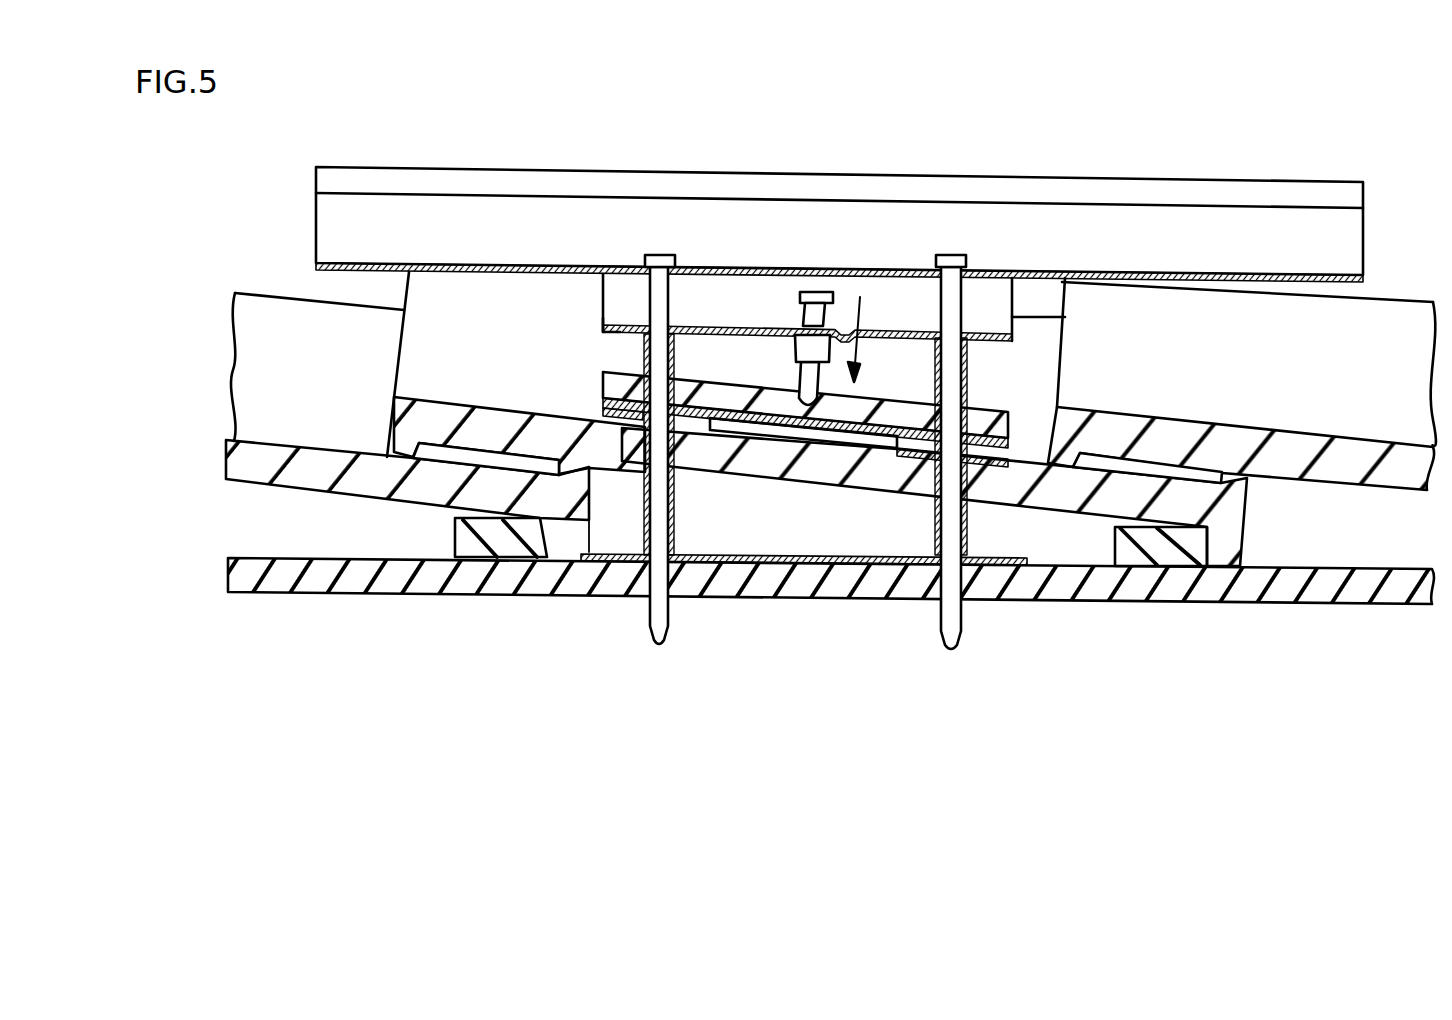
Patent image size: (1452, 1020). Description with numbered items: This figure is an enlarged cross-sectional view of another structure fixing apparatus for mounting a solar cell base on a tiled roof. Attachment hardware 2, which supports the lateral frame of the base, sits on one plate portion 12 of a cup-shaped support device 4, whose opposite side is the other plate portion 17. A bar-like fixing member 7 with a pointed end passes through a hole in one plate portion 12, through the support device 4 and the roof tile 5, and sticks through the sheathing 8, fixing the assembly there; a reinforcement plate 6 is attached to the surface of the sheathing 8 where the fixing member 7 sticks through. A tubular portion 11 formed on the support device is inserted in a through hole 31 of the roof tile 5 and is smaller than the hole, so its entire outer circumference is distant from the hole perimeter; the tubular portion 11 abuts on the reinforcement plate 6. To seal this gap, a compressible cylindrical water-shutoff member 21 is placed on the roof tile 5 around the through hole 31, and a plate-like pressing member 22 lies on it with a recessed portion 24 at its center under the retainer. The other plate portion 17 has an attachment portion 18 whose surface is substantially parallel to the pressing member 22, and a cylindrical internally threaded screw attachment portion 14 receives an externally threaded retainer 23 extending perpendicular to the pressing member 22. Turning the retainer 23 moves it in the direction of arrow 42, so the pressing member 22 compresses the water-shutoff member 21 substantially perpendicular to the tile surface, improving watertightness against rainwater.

The attachment hardware 2 is at (1176, 192).
The support device 4 is at (993, 300).
The roof tile 5 is at (279, 322).
The reinforcement plate 6 is at (1000, 556).
The fixing member 7 is at (661, 258).
The sheathing 8 is at (420, 573).
The tubular portion 11 is at (670, 532).
The one plate portion 12 is at (620, 275).
The screw attachment portion 14 is at (793, 331).
The other plate portion 17 is at (603, 327).
The attachment portion 18 is at (813, 320).
The water-shutoff member 21 is at (592, 405).
The pressing member 22 is at (1008, 428).
The retainer 23 is at (798, 345).
The recessed portion 24 is at (788, 414).
The through hole 31 is at (630, 455).
The arrow 42 is at (867, 325).